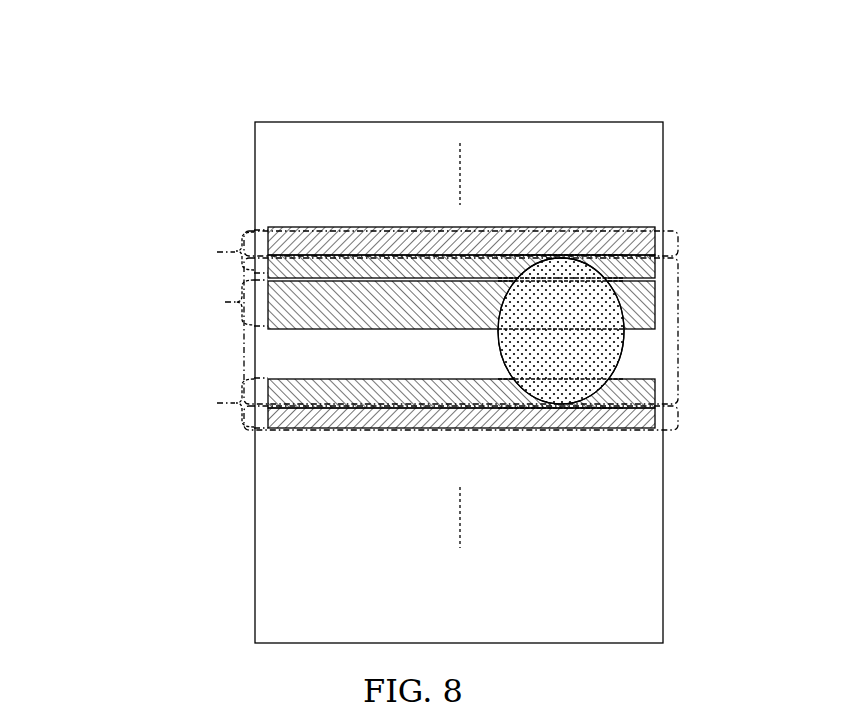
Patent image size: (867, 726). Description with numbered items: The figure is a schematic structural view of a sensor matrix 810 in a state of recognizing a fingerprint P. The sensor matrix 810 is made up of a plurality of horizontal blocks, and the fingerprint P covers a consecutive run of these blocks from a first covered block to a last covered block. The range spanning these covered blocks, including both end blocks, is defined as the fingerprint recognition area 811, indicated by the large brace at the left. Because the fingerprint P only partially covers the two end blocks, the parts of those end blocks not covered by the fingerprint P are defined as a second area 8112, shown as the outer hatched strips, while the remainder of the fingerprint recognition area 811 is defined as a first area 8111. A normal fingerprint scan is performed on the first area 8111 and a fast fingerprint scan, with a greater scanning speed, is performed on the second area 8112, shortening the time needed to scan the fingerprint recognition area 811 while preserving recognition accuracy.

The sensor matrix 810 is at (480, 97).
The fingerprint recognition area 811 is at (413, 368).
The first area 8111 is at (679, 330).
The second area 8112 is at (679, 243).
The fingerprint P is at (557, 401).